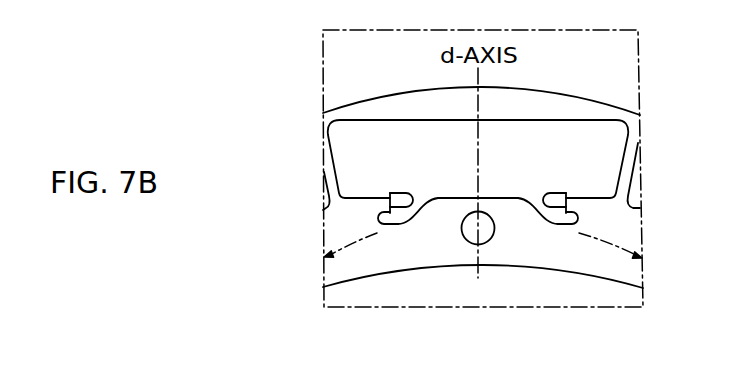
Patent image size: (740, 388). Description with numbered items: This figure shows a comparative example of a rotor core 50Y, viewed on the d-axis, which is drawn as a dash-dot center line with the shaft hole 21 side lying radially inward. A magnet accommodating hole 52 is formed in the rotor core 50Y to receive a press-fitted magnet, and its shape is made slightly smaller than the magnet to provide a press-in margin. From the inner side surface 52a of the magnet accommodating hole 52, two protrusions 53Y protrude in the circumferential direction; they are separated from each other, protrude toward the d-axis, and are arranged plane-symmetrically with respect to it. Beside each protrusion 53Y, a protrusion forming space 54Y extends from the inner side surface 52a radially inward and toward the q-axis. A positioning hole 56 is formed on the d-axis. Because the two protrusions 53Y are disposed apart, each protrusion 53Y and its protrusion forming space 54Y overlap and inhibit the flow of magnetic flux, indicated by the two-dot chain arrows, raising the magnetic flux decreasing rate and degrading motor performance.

The shaft hole 21 is at (609, 280).
The rotor core 50Y is at (593, 100).
The magnet accommodating hole 52 is at (517, 153).
The inner side surface 52a is at (462, 196).
The protrusion 53Y is at (399, 194).
The protrusion forming space 54Y is at (386, 222).
The positioning hole 56 is at (486, 242).